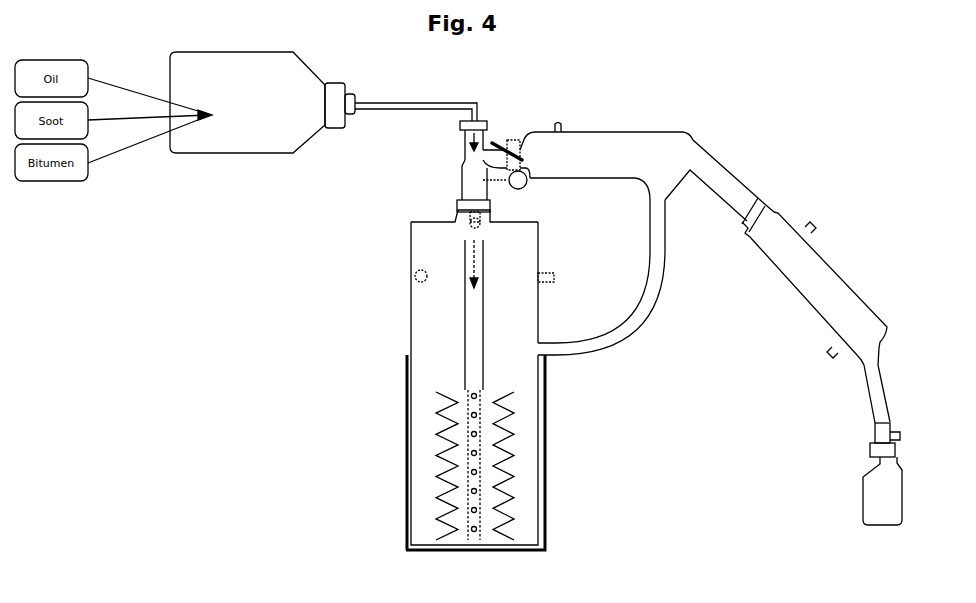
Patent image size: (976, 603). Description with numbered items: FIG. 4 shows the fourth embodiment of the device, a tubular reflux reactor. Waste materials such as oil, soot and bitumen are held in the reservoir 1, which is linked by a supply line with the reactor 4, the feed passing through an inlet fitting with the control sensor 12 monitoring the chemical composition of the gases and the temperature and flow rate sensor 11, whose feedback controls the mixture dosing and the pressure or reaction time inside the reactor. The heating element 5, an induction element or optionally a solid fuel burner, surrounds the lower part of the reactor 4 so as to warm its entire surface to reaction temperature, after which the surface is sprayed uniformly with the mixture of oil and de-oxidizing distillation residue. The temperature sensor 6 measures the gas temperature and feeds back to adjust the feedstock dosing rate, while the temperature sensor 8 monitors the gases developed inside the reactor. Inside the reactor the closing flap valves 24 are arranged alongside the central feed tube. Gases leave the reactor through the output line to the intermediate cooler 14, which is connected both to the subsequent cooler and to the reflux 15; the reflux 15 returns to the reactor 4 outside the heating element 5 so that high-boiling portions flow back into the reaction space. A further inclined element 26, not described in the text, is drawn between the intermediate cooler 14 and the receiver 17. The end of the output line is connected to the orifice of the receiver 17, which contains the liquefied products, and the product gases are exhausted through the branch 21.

The reservoir 1 is at (208, 170).
The reactor 4 is at (505, 310).
The heating element 5 is at (407, 470).
The temperature sensor 6 is at (408, 518).
The temperature sensor for exhaust gases behind reactor 8 is at (411, 263).
The temperature and flow rate sensor 11 is at (505, 185).
The control sensor 12 is at (493, 140).
The intermediate cooler 14 is at (617, 142).
The reflux 15 is at (632, 325).
The receiver 17 is at (875, 488).
The branch for product gas exhaustion 21 is at (870, 426).
The closing flap valves 24 is at (495, 445).
The condenser 26 is at (830, 308).